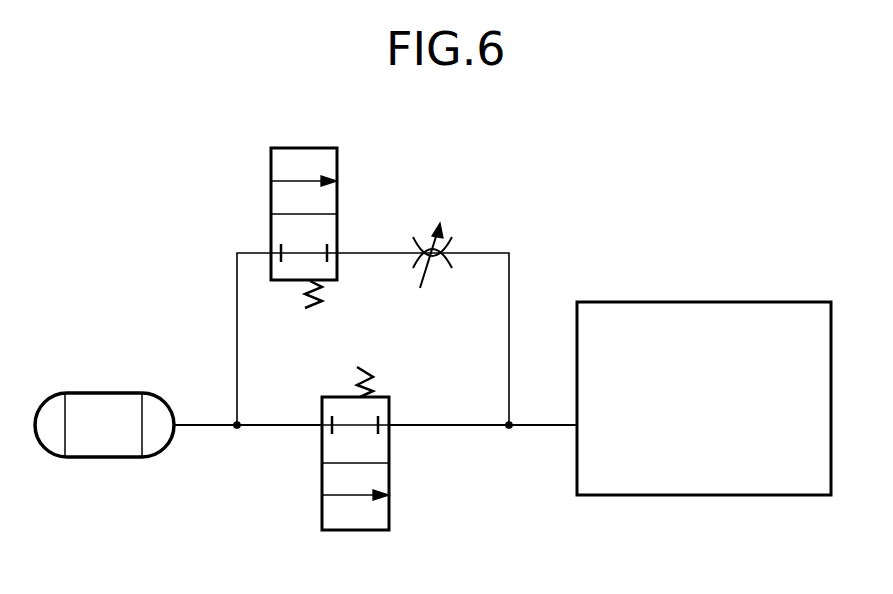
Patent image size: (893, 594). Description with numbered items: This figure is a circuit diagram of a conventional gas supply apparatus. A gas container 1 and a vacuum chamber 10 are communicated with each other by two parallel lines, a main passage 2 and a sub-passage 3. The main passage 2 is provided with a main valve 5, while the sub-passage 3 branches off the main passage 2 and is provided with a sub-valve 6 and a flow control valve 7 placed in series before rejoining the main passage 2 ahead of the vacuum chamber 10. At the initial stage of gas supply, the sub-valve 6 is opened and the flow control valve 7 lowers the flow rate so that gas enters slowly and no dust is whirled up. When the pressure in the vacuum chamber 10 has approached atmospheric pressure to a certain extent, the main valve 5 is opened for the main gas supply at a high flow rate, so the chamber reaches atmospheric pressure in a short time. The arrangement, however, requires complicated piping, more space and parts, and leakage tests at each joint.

The gas container 1 is at (123, 392).
The main passage 2 is at (214, 430).
The sub-passage 3 is at (238, 365).
The main valve 5 is at (316, 531).
The sub-valve 6 is at (340, 146).
The flow control valve 7 is at (462, 222).
The vacuum chamber 10 is at (811, 302).